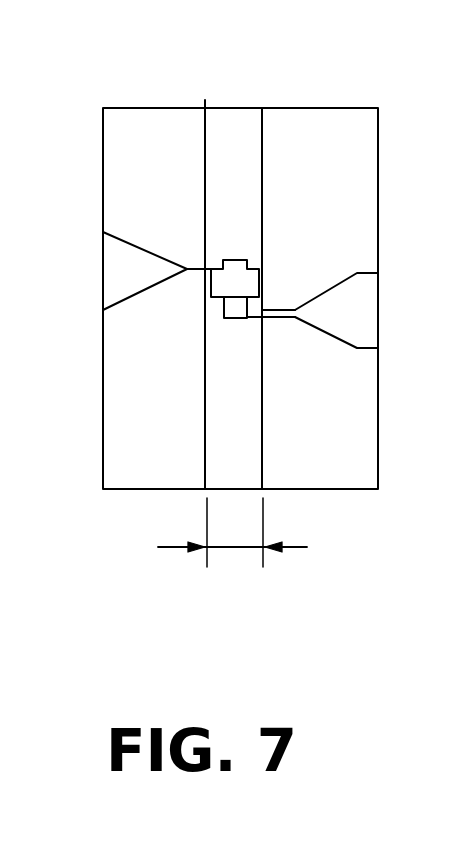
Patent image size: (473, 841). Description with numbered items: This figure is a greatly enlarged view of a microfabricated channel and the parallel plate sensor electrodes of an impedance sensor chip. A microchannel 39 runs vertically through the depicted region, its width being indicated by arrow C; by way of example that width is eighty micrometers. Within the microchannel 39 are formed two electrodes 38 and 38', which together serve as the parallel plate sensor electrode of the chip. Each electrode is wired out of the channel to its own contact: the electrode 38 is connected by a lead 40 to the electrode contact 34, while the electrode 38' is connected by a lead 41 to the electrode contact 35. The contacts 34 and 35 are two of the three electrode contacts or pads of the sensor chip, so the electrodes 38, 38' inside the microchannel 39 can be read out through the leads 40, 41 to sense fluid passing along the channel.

The electrode contact 34 is at (128, 278).
The electrode contact 35 is at (355, 312).
The electrode 38 is at (272, 257).
The electrode 38' is at (189, 333).
The microchannel 39 is at (237, 133).
The lead 40 is at (197, 267).
The lead 41 is at (280, 317).
The arrow C is at (243, 548).